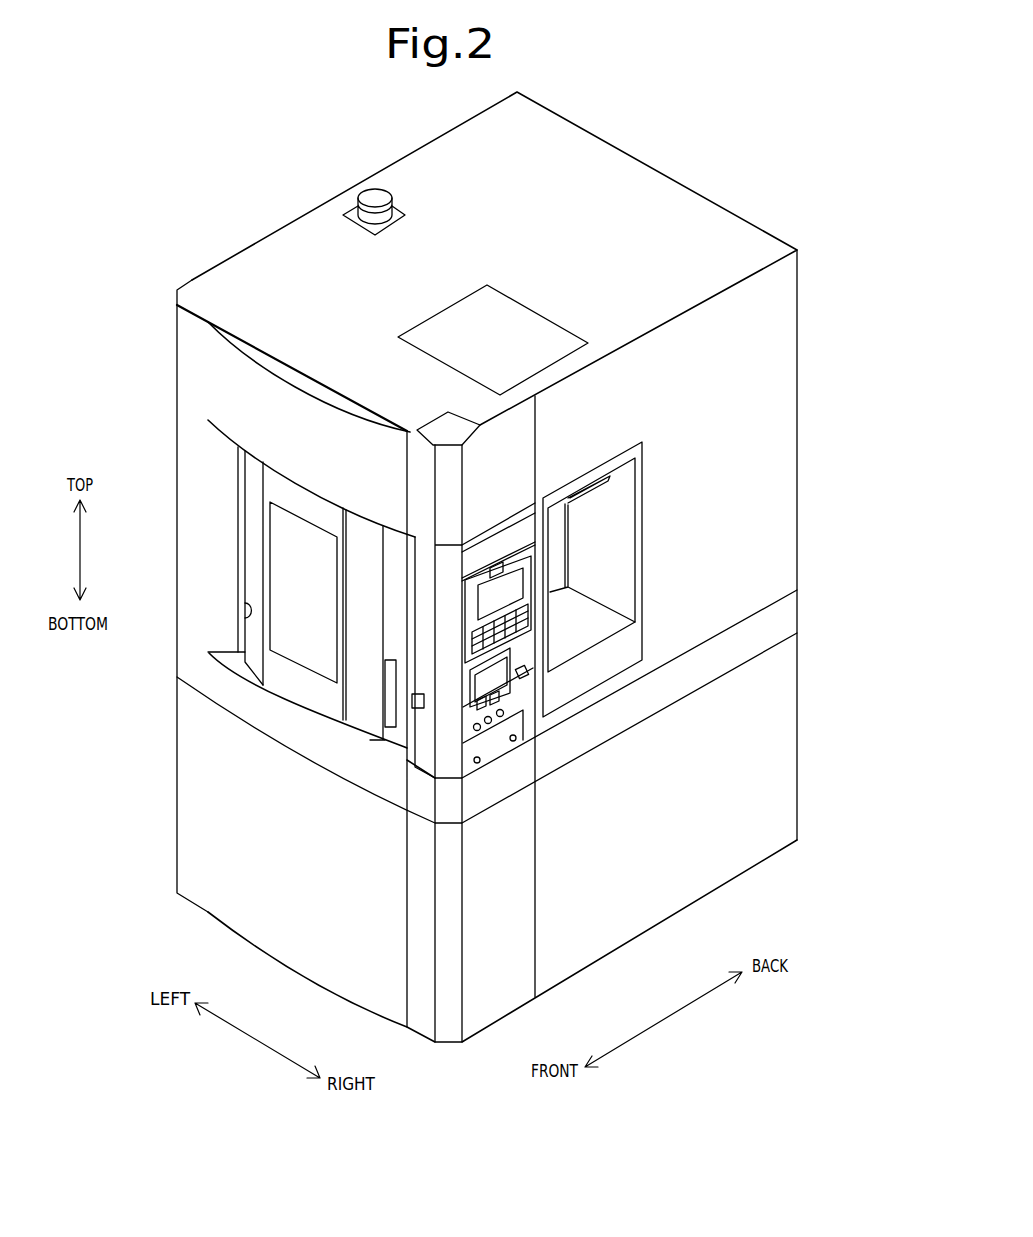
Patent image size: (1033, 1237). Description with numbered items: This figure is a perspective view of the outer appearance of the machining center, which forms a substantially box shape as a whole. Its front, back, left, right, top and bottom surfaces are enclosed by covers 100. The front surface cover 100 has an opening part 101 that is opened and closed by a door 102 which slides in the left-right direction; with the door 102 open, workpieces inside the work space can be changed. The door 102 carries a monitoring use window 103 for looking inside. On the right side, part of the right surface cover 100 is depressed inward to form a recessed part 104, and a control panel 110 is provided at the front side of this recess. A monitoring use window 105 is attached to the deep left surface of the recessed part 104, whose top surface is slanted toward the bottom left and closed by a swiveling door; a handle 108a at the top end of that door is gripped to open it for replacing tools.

The cover 100 is at (737, 237).
The opening part 101 is at (250, 618).
The door 102 is at (252, 565).
The monitoring use window 103 is at (302, 642).
The recessed part 104 is at (606, 590).
The monitoring use window 105 is at (557, 573).
The handle 108a is at (588, 493).
The control panel 110 is at (497, 740).